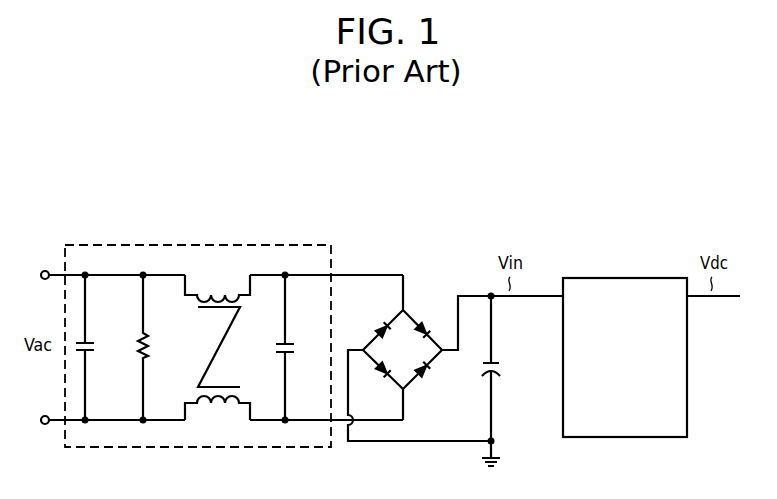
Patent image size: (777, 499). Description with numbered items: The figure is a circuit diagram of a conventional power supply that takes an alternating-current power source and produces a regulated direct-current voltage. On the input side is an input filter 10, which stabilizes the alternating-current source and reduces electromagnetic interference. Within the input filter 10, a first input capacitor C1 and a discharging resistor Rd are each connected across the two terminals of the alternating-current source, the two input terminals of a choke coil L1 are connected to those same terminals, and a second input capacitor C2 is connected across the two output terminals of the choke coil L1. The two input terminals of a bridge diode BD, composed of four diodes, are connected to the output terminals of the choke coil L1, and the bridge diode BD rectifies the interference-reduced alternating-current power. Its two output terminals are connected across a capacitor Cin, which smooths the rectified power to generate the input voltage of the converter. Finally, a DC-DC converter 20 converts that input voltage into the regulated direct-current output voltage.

The input filter 10 is at (166, 244).
The DC-DC converter 20 is at (635, 277).
The first input capacitor C1 is at (95, 347).
The discharging resistor Rd is at (155, 347).
The choke coil L1 is at (219, 347).
The second input capacitor C2 is at (297, 347).
The bridge diode BD is at (402, 332).
The capacitor Cin is at (505, 368).